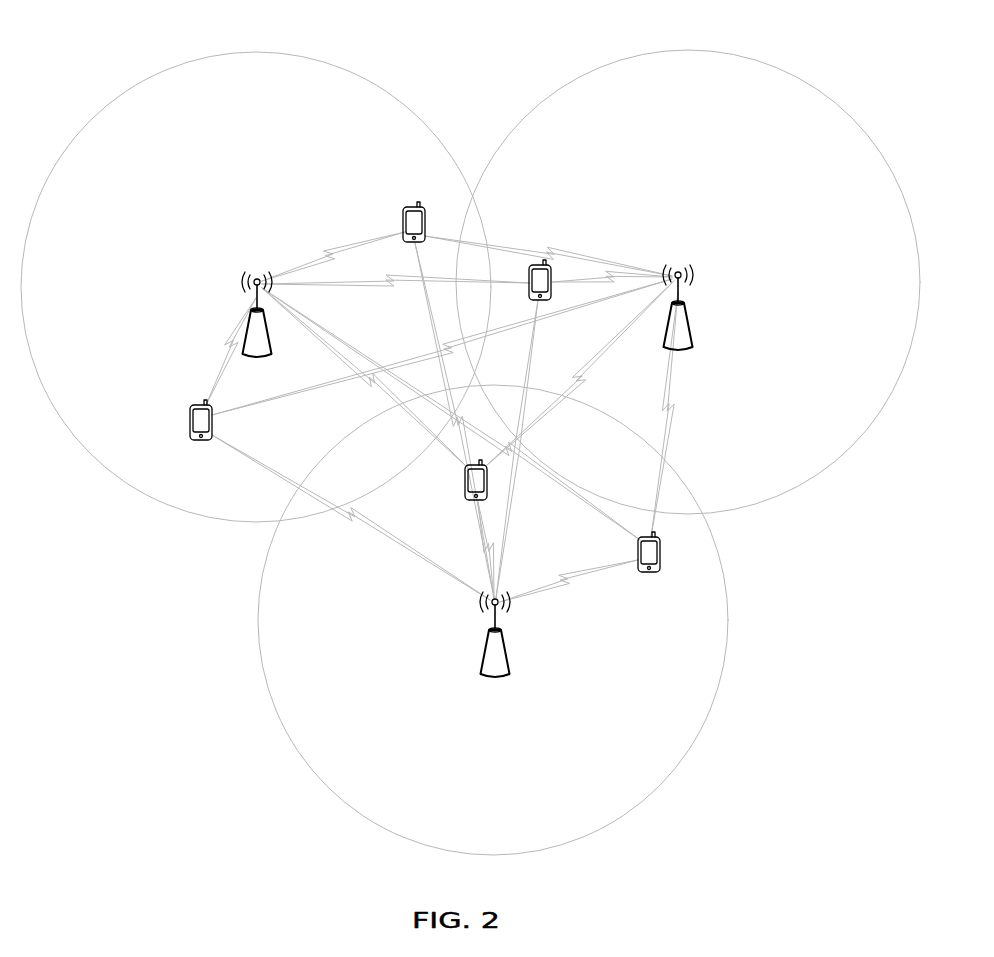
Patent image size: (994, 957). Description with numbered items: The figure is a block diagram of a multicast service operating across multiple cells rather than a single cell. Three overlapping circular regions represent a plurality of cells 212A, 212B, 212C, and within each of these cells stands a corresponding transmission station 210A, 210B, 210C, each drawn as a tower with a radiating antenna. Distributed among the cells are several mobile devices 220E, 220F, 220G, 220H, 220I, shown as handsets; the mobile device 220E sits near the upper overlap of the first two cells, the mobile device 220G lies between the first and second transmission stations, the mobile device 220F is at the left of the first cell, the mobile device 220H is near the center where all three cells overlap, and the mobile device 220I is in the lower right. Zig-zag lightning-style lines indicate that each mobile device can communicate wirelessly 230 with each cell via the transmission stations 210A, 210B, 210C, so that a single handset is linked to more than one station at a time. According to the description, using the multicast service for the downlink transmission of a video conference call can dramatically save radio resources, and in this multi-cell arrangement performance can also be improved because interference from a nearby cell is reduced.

The transmission station 210A is at (242, 315).
The transmission station 210B is at (690, 342).
The transmission station 210C is at (511, 670).
The cell 212A is at (140, 81).
The cell 212B is at (547, 69).
The cell 212C is at (313, 775).
The mobile device 220E is at (410, 205).
The mobile device 220F is at (198, 403).
The mobile device 220G is at (534, 260).
The mobile device 220H is at (466, 498).
The mobile device 220I is at (653, 574).
The wireless communication 230 is at (388, 556).